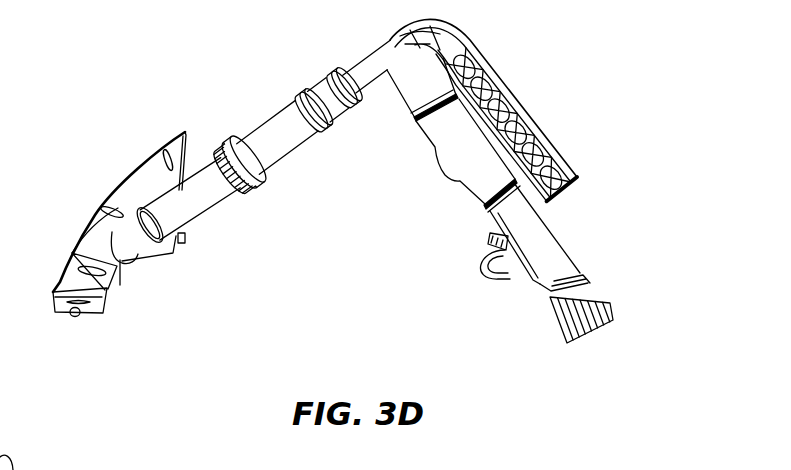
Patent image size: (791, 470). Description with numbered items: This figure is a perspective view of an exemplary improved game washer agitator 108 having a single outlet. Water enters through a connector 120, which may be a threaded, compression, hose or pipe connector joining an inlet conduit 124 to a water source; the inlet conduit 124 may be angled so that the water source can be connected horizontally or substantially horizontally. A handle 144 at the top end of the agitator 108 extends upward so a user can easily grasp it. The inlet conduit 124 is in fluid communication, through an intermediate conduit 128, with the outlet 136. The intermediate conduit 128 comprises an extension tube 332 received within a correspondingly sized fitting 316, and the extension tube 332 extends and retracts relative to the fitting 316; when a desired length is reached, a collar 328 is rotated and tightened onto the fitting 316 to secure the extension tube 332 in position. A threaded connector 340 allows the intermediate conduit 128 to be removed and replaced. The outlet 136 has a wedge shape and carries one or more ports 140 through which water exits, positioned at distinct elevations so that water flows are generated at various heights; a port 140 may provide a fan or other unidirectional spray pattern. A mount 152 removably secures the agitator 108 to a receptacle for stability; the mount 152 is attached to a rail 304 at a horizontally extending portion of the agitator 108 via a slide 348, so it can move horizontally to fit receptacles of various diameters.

The agitator 108 is at (360, 300).
The connector 120 is at (602, 294).
The inlet conduit 124 is at (375, 55).
The intermediate conduit 128 is at (229, 100).
The outlet 136 is at (128, 292).
The port 140 is at (162, 150).
The handle 144 is at (522, 90).
The mount 152 is at (474, 258).
The rail 304 is at (533, 284).
The fitting 316 is at (314, 150).
The collar 328 is at (262, 198).
The extension tube 332 is at (205, 216).
The threaded connector 340 is at (166, 264).
The slide 348 is at (490, 236).